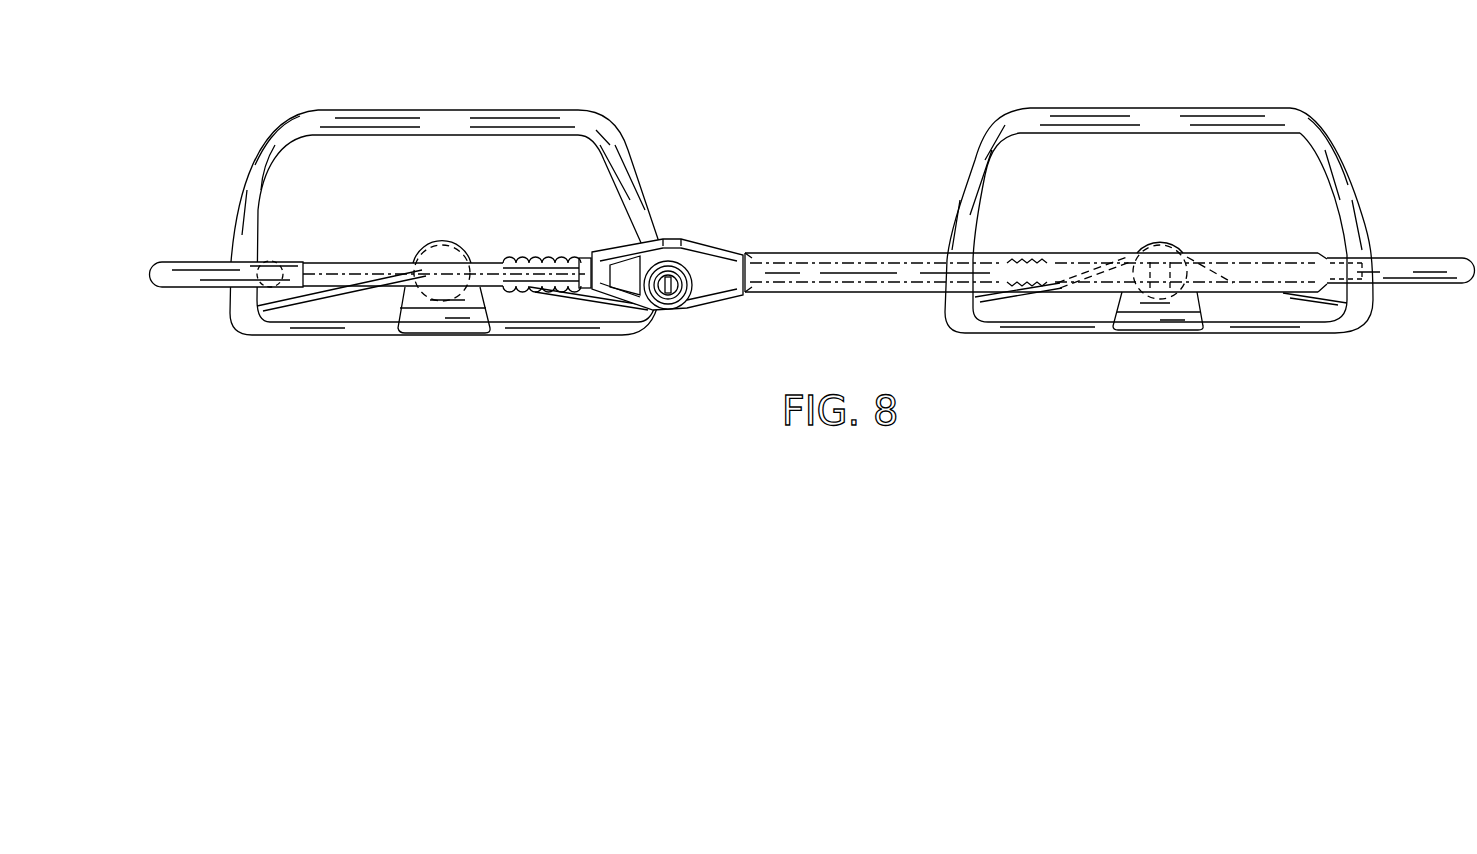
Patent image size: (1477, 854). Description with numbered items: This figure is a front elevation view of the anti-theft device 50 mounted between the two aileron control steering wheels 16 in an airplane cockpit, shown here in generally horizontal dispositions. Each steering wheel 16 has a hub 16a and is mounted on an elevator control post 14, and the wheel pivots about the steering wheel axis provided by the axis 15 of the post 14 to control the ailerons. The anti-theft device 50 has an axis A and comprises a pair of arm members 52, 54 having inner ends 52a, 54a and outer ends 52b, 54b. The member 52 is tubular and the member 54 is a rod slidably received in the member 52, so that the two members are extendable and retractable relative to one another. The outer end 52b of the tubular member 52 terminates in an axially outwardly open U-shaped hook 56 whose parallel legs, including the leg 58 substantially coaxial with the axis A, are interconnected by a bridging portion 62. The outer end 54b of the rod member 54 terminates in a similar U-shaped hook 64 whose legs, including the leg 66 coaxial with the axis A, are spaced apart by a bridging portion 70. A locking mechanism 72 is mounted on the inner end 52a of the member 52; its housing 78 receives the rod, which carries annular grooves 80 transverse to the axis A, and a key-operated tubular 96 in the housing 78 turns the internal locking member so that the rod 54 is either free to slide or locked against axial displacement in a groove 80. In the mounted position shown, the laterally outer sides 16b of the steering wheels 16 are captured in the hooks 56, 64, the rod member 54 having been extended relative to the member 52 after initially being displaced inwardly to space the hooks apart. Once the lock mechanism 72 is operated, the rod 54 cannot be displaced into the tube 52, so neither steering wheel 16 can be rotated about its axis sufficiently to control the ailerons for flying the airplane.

The aileron control steering wheel 16 is at (528, 108).
The hub 16a is at (428, 327).
The laterally outer side 16b is at (255, 173).
The elevator control post 14 is at (422, 350).
The axis 15 is at (443, 275).
The anti-theft device 50 is at (855, 186).
The arm member 52 is at (1045, 248).
The inner end 52a is at (755, 294).
The outer end 52b is at (1310, 297).
The arm member 54 is at (361, 258).
The inner end 54a is at (1062, 322).
The outer end 54b is at (315, 280).
The U-shaped hook 56 is at (1428, 254).
The leg 58 is at (1448, 280).
The bridging portion 62 is at (1326, 256).
The U-shaped hook 64 is at (194, 259).
The leg 66 is at (176, 283).
The bridging portion 70 is at (276, 259).
The locking mechanism 72 is at (708, 240).
The housing 78 is at (684, 249).
The annular grooves 80 is at (560, 275).
The key-operated tubular 96 is at (678, 308).
The axis A is at (847, 275).